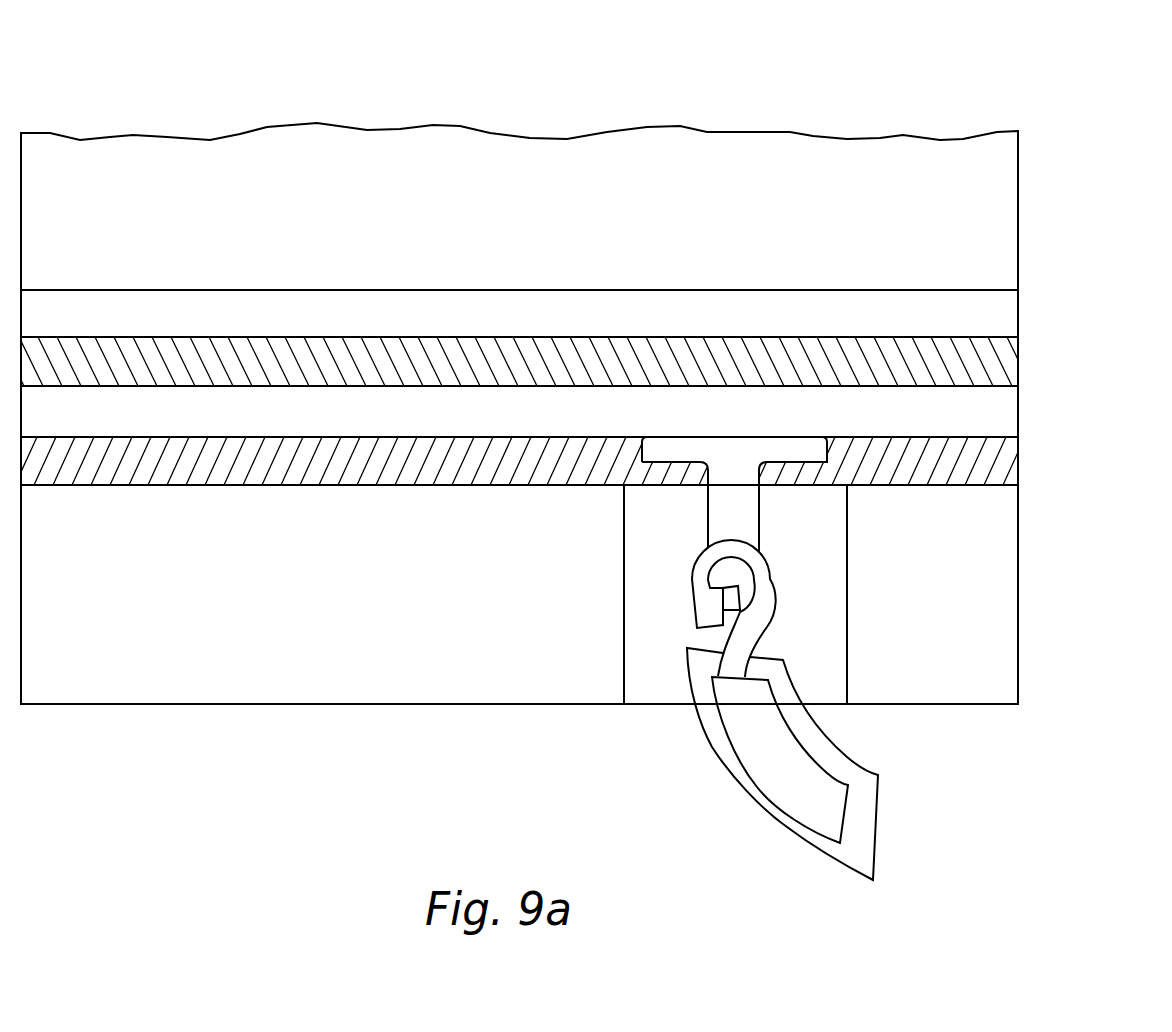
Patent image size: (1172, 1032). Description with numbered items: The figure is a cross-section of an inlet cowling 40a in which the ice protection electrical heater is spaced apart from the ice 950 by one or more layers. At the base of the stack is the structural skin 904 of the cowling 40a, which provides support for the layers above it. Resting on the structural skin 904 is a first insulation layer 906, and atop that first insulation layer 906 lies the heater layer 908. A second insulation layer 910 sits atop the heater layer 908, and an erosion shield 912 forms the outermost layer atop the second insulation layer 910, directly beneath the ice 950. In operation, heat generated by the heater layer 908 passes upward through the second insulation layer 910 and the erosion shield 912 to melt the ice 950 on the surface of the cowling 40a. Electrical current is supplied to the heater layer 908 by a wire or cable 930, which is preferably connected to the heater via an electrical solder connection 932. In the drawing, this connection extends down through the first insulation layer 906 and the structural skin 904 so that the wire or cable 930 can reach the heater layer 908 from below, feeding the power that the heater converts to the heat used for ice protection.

The inlet cowling 40a is at (1088, 143).
The ice 950 is at (997, 192).
The erosion shield 912 is at (1013, 312).
The second insulation layer 910 is at (1006, 362).
The heater layer 908 is at (1007, 406).
The first insulation layer 906 is at (1000, 468).
The structural skin 904 is at (993, 566).
The electrical solder connection 932 is at (707, 526).
The wire or cable 930 is at (736, 774).